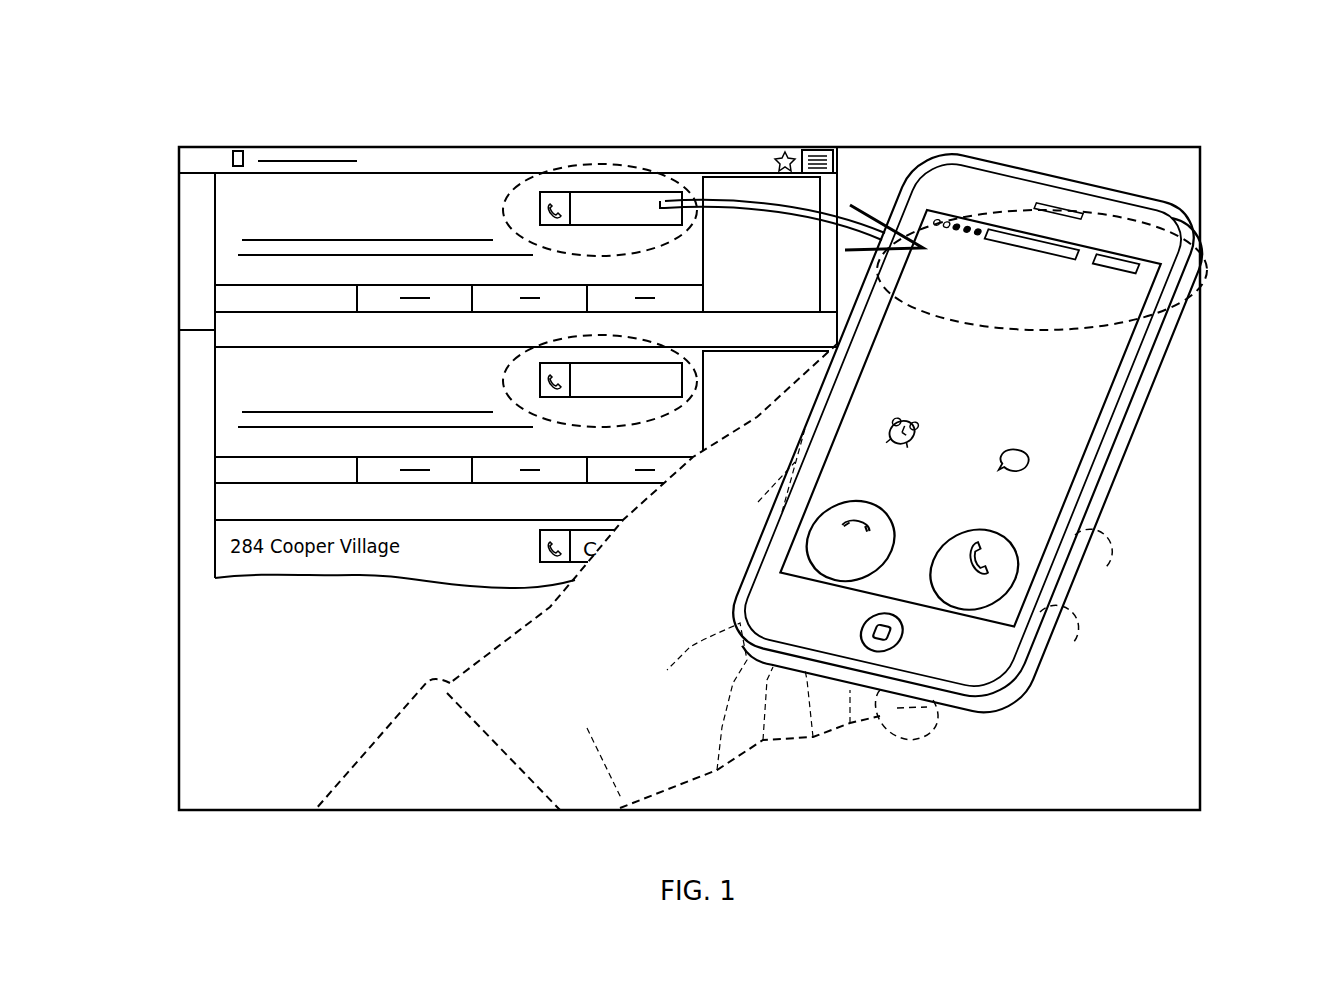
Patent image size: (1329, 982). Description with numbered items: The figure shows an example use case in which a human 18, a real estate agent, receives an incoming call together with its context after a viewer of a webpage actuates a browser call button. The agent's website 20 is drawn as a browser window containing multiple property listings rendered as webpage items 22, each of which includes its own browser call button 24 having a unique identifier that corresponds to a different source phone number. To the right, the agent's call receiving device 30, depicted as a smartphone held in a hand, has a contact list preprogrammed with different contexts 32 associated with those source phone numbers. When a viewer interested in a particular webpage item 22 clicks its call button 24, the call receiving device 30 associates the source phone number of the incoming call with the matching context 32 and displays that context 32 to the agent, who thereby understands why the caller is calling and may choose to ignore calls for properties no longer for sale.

The human 18 is at (530, 622).
The website 20 is at (441, 140).
The webpage items 22 is at (176, 88).
The browser call buttons 24 is at (607, 182).
The call receiving device 30 is at (965, 172).
The context 32 is at (1207, 270).